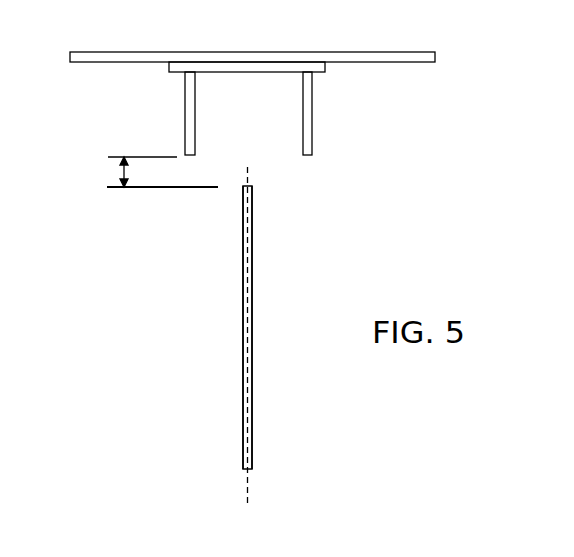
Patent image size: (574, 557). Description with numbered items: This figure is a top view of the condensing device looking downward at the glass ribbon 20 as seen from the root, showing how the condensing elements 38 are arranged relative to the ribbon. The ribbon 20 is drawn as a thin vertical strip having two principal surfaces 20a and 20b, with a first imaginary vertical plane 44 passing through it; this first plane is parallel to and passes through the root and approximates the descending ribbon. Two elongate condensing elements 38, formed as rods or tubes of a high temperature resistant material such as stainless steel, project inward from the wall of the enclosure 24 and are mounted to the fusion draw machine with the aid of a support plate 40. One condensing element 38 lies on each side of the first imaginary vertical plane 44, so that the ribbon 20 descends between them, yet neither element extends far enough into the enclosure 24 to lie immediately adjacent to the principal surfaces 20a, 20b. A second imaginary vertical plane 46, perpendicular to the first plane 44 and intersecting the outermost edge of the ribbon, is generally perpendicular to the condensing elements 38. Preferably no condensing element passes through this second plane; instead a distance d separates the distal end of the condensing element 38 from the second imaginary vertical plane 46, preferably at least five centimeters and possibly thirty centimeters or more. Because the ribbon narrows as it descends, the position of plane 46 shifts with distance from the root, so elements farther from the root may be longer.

The enclosure 24 is at (102, 52).
The support plate 40 is at (273, 73).
The condensing element 38 is at (185, 93).
The second imaginary vertical plane 46 is at (165, 188).
The distance d is at (120, 172).
The first imaginary vertical plane 44 is at (248, 498).
The glass ribbon 20 is at (250, 331).
The principal surface of the glass ribbon 20a is at (243, 302).
The principal surface of the glass ribbon 20b is at (252, 275).